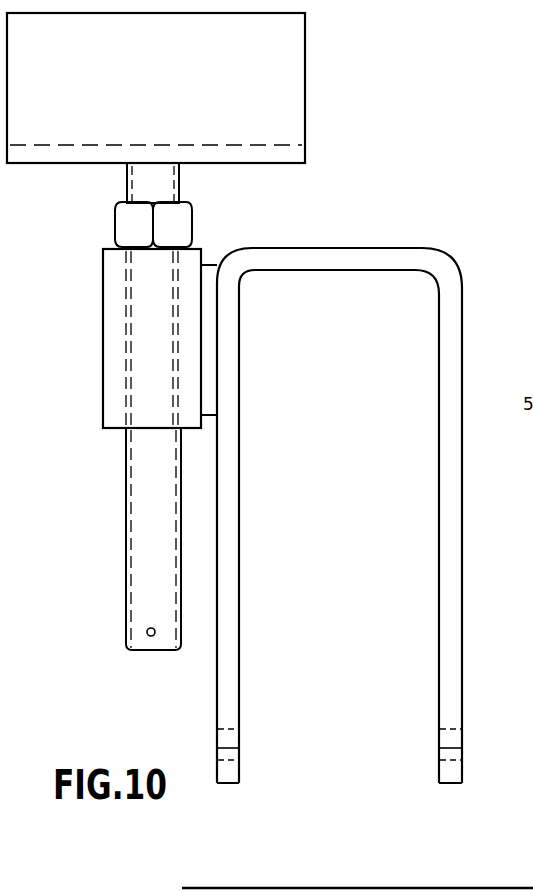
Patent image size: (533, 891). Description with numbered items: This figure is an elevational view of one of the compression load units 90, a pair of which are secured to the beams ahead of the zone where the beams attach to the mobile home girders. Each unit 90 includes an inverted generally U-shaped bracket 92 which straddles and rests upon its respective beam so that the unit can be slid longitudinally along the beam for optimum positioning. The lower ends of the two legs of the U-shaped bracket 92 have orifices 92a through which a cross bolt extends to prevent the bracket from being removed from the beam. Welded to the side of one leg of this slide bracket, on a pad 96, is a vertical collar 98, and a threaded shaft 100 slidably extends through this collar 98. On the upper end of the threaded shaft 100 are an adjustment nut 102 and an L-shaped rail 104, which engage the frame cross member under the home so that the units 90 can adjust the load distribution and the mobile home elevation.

The compression load unit 90 is at (417, 230).
The inverted generally U-shaped bracket 92 is at (433, 263).
The orifices 92a is at (235, 742).
The pad 96 is at (207, 273).
The vertical collar 98 is at (112, 318).
The threaded shaft 100 is at (142, 508).
The adjustment nut 102 is at (187, 215).
The L-shaped rail 104 is at (305, 92).